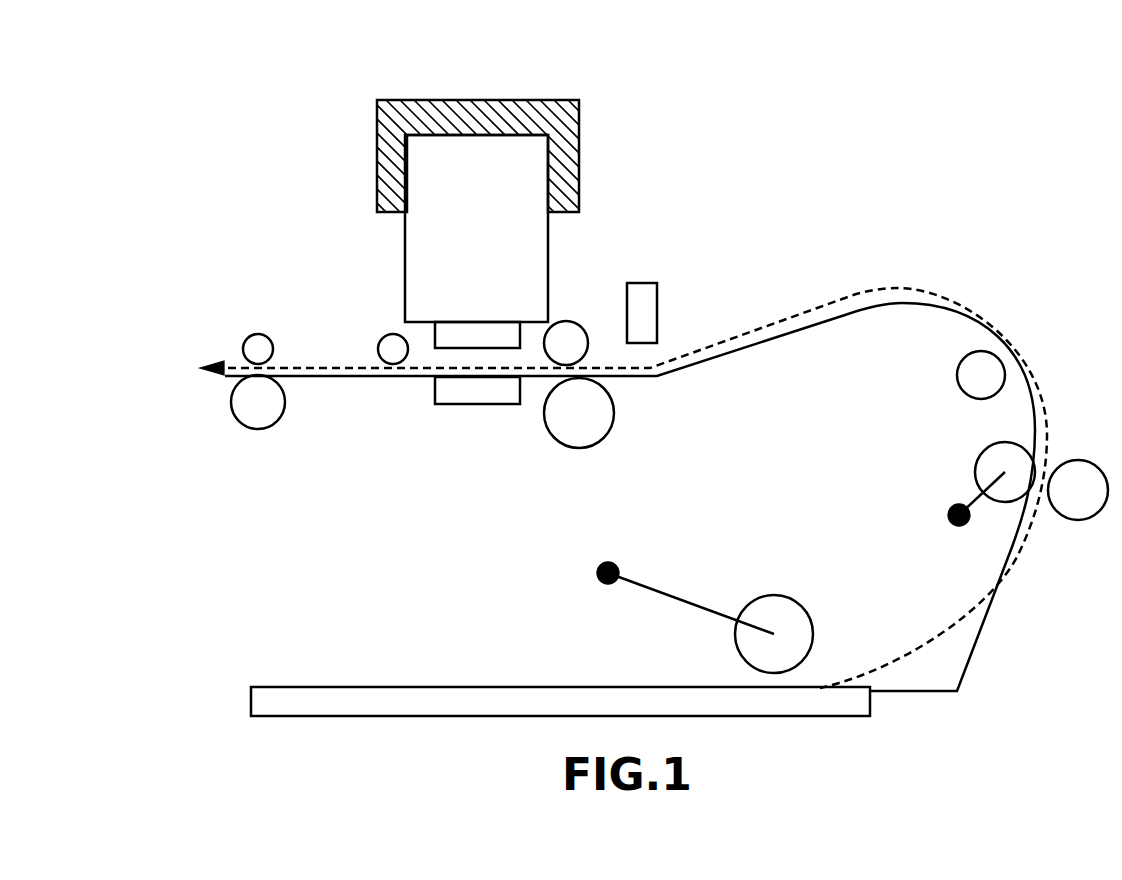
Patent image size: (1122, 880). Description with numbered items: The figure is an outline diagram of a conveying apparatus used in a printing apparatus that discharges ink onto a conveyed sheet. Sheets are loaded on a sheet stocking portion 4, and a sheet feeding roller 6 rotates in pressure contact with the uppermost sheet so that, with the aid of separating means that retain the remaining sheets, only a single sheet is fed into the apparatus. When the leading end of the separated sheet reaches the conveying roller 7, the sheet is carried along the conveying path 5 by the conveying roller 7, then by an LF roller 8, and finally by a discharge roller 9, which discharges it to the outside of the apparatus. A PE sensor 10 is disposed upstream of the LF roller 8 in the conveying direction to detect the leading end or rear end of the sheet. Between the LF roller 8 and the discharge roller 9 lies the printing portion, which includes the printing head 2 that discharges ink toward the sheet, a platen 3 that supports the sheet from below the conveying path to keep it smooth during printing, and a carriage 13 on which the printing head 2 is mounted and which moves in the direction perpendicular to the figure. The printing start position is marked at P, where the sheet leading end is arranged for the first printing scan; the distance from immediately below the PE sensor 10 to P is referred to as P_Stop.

The printing head 2 is at (405, 272).
The platen 3 is at (473, 405).
The sheet stocking portion 4 is at (306, 686).
The conveying path 5 is at (1005, 333).
The sheet feeding roller 6 is at (780, 595).
The conveying roller 7 is at (975, 452).
The LF roller 8 is at (574, 450).
The discharge roller 9 is at (256, 430).
The PE sensor 10 is at (643, 283).
The carriage 13 is at (480, 106).
The printing start position P is at (413, 378).